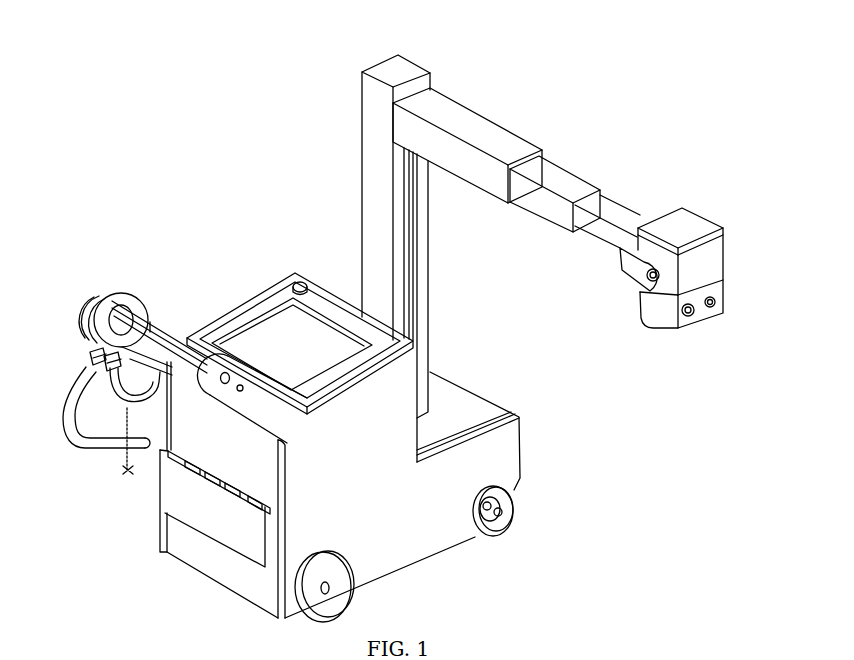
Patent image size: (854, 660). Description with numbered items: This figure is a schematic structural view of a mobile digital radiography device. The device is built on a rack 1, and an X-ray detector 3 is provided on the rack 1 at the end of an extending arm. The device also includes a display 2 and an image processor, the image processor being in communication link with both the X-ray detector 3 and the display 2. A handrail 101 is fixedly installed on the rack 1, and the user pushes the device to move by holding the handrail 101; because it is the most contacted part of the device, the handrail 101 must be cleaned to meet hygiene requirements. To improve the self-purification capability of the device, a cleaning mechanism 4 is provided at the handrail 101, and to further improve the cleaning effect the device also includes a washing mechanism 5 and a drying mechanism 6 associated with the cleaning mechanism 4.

The rack 1 is at (427, 553).
The display 2 is at (242, 323).
The X-ray detector 3 is at (661, 315).
The cleaning mechanism 4 is at (135, 303).
The washing mechanism 5 is at (136, 470).
The drying mechanism 6 is at (110, 390).
The handrail 101 is at (176, 340).